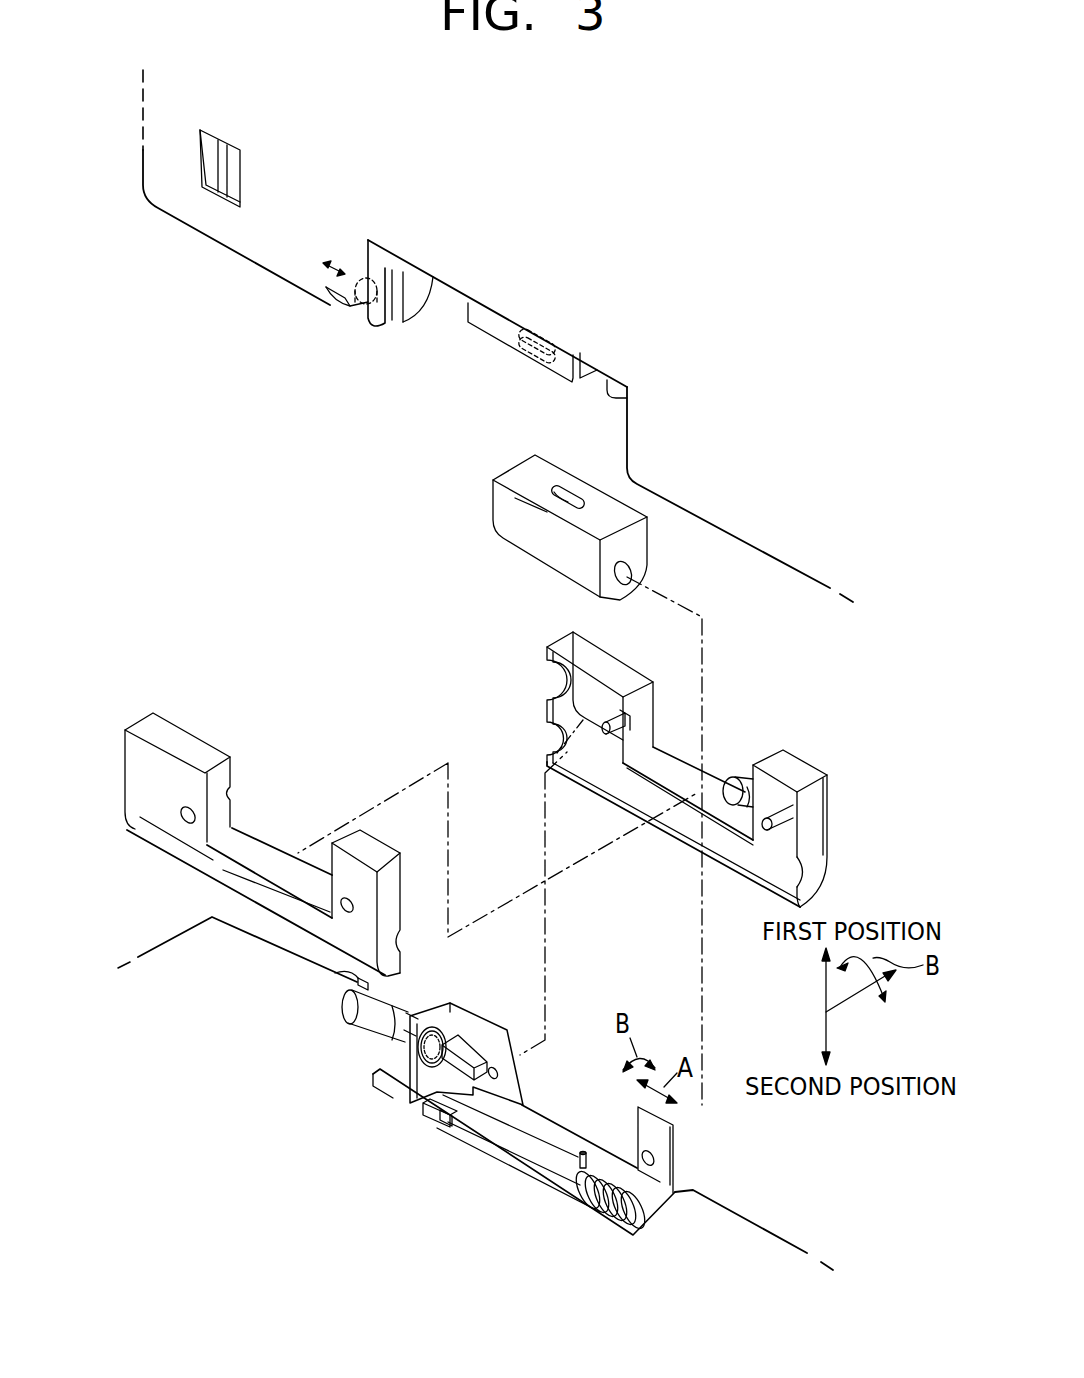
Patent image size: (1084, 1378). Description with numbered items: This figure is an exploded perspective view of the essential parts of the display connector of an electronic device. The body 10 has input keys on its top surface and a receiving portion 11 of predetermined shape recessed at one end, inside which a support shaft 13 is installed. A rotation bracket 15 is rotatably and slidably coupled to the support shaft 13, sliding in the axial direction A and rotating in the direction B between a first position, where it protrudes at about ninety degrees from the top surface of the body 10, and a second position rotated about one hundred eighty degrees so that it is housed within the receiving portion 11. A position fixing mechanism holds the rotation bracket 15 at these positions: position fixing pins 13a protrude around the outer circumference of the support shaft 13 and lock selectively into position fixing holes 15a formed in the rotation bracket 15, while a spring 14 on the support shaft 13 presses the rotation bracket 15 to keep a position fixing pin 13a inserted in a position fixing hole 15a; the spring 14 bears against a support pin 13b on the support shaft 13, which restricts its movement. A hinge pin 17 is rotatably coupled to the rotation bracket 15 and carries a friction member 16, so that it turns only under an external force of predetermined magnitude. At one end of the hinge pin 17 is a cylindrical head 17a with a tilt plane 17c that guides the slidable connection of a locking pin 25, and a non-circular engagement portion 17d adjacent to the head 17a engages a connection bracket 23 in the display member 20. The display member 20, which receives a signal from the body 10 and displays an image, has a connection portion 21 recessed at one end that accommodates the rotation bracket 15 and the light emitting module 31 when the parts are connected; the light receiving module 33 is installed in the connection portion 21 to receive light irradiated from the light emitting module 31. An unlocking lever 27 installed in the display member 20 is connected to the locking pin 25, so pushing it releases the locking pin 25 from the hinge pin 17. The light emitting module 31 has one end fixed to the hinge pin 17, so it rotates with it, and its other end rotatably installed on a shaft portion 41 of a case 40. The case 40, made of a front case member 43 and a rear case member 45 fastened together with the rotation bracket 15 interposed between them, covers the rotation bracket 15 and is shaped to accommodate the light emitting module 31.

The body 10 is at (757, 1195).
The receiving portions 11 is at (393, 1092).
The support shaft 13 is at (530, 1153).
The position fixing pin 13a is at (443, 1124).
The support pin 13b is at (583, 1150).
The spring 14 is at (597, 1197).
The rotation bracket 15 is at (677, 1143).
The position fixing hole 15a is at (427, 1107).
The friction member 16 is at (452, 1032).
The hinge pin 17 is at (375, 1016).
The cylindrical head 17a is at (343, 1007).
The tilt plane 17c is at (335, 973).
The non-circular engagement portion 17d is at (375, 1027).
The display member 20 is at (212, 272).
The connection portion 21 is at (630, 398).
The connection bracket 23 is at (356, 323).
The locking pin 25 is at (354, 275).
The unlocking lever 27 is at (213, 171).
The light emitting module 31 is at (470, 492).
The light receiving module 33 is at (486, 335).
The case 40 is at (725, 769).
The shaft portion 41 is at (736, 778).
The front case member 43 is at (818, 857).
The rear case member 45 is at (182, 735).